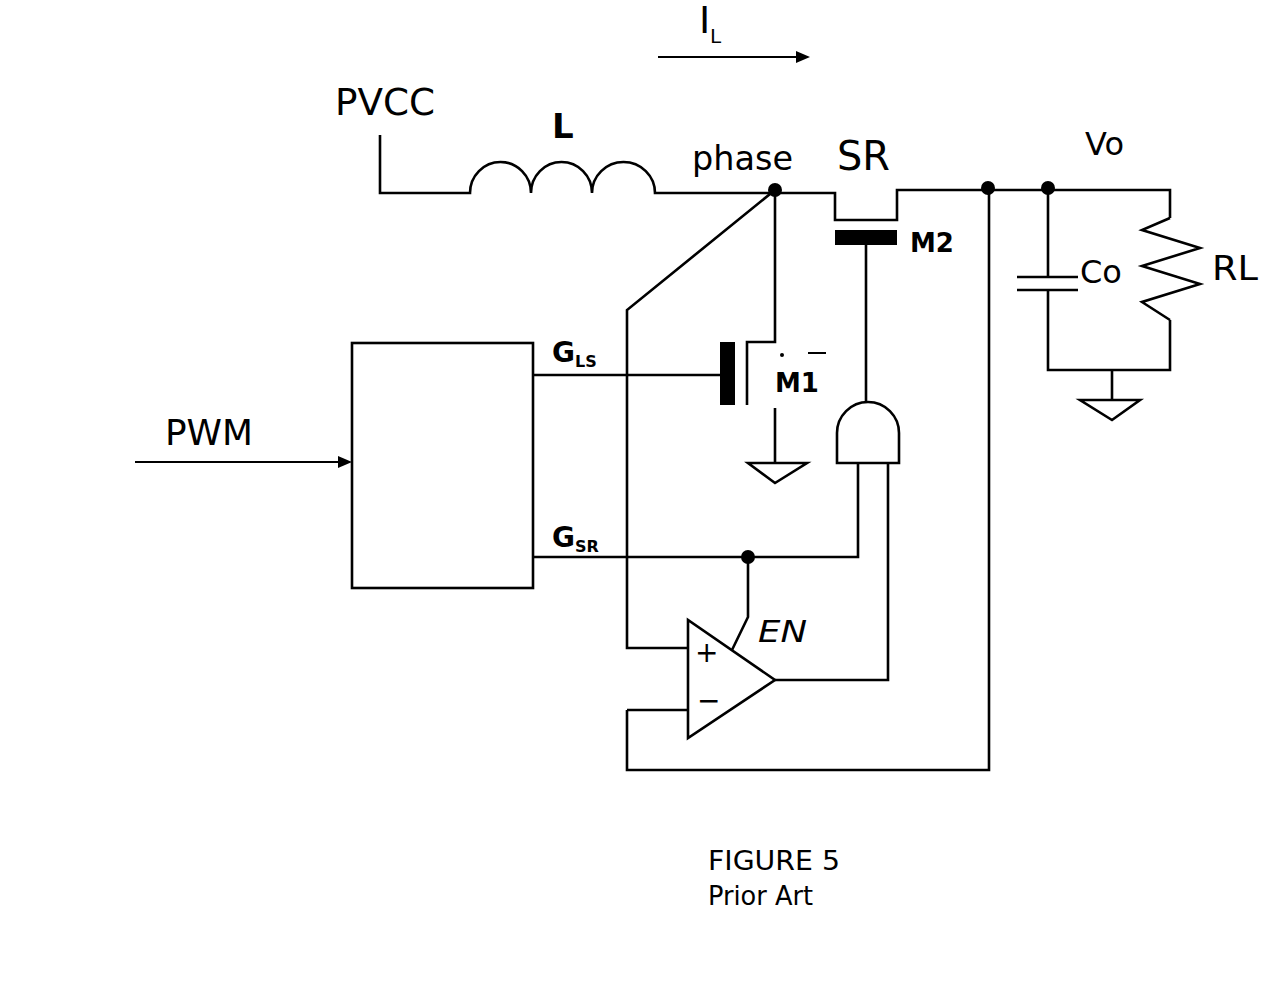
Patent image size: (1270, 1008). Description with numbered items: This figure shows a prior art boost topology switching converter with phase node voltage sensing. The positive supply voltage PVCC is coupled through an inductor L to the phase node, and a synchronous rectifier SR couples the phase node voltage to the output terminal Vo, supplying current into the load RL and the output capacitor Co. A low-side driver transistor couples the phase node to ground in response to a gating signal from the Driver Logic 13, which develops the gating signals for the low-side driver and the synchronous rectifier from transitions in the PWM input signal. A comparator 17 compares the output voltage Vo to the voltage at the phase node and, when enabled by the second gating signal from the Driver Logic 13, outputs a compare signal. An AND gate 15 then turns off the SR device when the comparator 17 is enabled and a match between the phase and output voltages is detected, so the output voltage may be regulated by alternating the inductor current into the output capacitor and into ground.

The Driver Logic 13 is at (433, 565).
The AND gate 15 is at (877, 432).
The comparator 17 is at (727, 683).